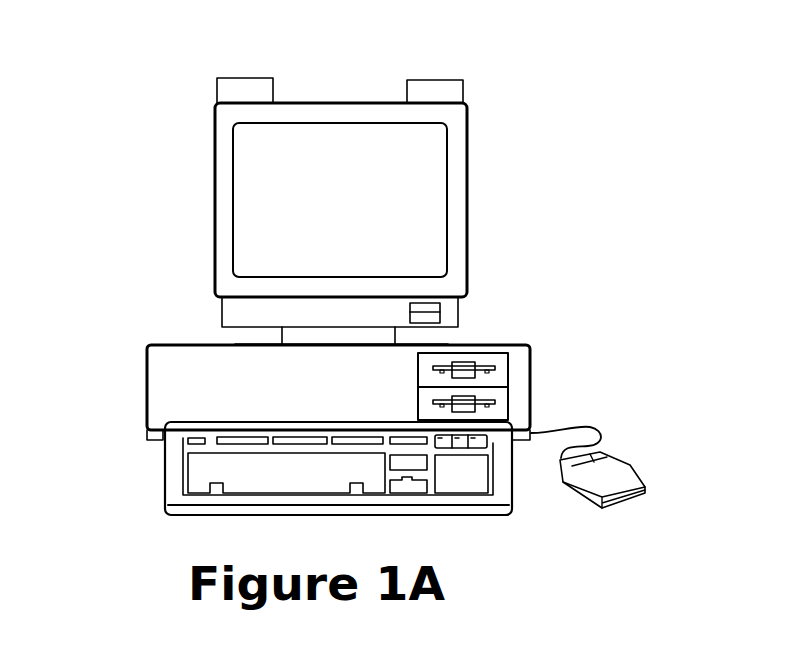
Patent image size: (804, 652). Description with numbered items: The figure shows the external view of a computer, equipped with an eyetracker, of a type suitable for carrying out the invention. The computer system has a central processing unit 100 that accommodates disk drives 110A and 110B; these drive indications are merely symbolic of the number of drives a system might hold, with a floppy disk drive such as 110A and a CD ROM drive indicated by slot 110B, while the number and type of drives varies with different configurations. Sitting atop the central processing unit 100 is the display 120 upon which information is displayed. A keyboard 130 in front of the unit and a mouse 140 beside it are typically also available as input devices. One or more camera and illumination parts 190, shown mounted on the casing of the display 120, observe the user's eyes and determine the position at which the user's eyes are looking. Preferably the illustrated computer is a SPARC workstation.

The central processing unit 100 is at (139, 361).
The disk drive 110A is at (413, 370).
The disk drive 110B is at (413, 410).
The display 120 is at (471, 207).
The keyboard 130 is at (154, 483).
The mouse 140 is at (641, 470).
The camera and illumination parts 190 is at (402, 80).